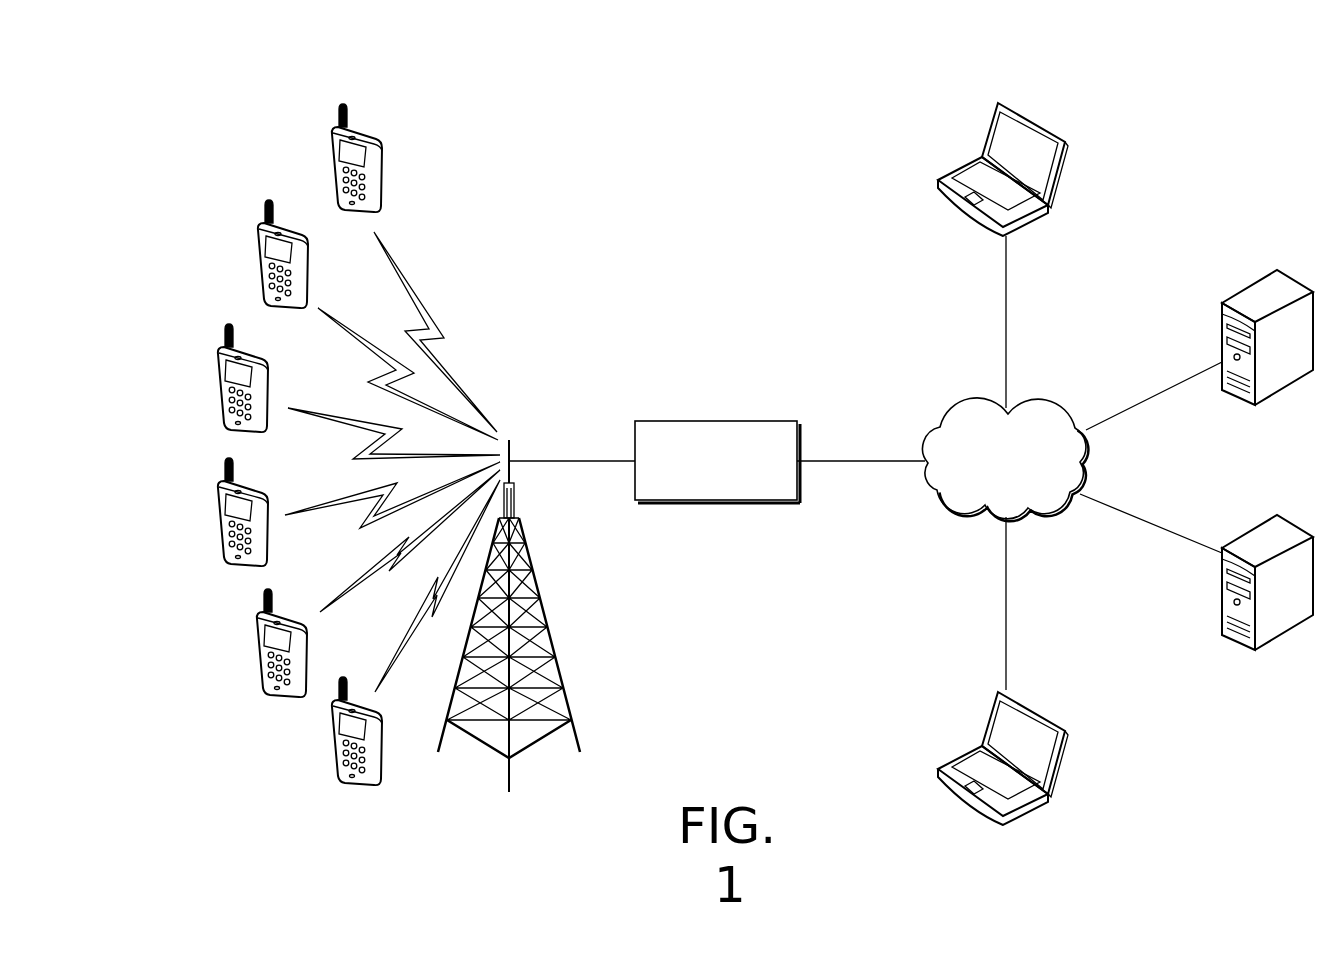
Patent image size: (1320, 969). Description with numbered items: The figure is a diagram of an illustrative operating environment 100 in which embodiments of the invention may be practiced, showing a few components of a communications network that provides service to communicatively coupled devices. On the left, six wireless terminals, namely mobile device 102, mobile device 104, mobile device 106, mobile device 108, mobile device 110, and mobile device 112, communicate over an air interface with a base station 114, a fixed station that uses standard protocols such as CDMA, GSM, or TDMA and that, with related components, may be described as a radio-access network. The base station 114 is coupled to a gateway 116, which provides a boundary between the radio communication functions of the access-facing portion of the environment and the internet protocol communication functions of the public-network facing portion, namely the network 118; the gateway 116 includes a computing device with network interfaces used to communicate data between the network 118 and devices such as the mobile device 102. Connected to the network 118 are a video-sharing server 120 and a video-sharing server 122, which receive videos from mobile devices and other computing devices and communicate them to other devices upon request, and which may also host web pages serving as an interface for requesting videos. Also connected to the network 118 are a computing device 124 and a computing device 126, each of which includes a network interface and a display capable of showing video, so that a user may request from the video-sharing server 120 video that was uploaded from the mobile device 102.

The illustrative operating environment 100 is at (1273, 188).
The mobile device 102 is at (366, 122).
The mobile device 104 is at (292, 223).
The mobile device 106 is at (250, 345).
The mobile device 108 is at (241, 566).
The mobile device 110 is at (272, 698).
The mobile device 112 is at (355, 788).
The base station 114 is at (548, 648).
The gateway 116 is at (715, 421).
The network 118 is at (1023, 472).
The video-sharing server 120 is at (1222, 330).
The video-sharing server 122 is at (1222, 590).
The computing device 124 is at (1052, 757).
The computing device 126 is at (1063, 168).